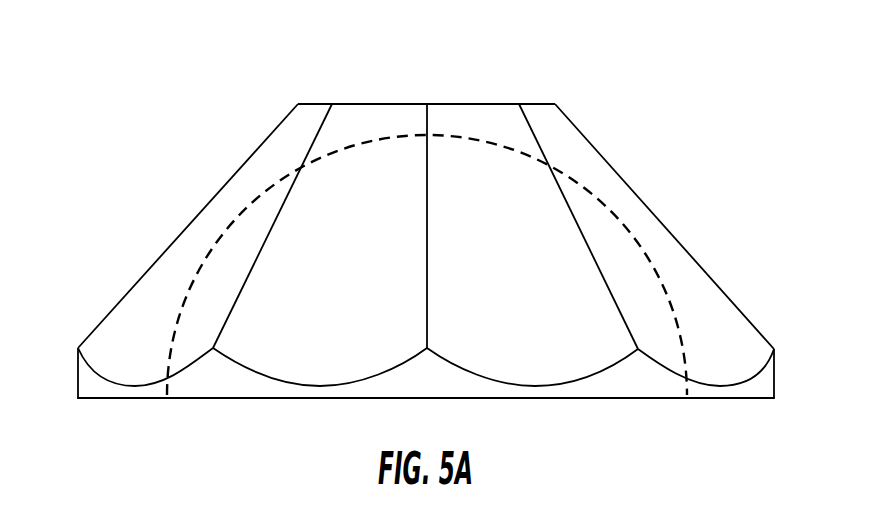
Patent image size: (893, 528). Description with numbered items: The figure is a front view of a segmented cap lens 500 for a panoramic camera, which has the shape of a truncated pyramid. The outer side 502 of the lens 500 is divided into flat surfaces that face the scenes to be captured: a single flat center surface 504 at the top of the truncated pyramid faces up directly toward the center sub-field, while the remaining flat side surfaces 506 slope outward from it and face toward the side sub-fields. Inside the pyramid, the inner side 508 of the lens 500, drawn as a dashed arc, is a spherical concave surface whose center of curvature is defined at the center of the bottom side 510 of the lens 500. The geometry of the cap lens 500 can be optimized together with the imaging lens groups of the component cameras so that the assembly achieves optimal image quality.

The cap lens 500 is at (115, 88).
The outer side 502 is at (255, 153).
The center surface 504 is at (457, 104).
The side surfaces 506 is at (195, 236).
The inner side 508 is at (181, 311).
The bottom side 510 is at (513, 398).